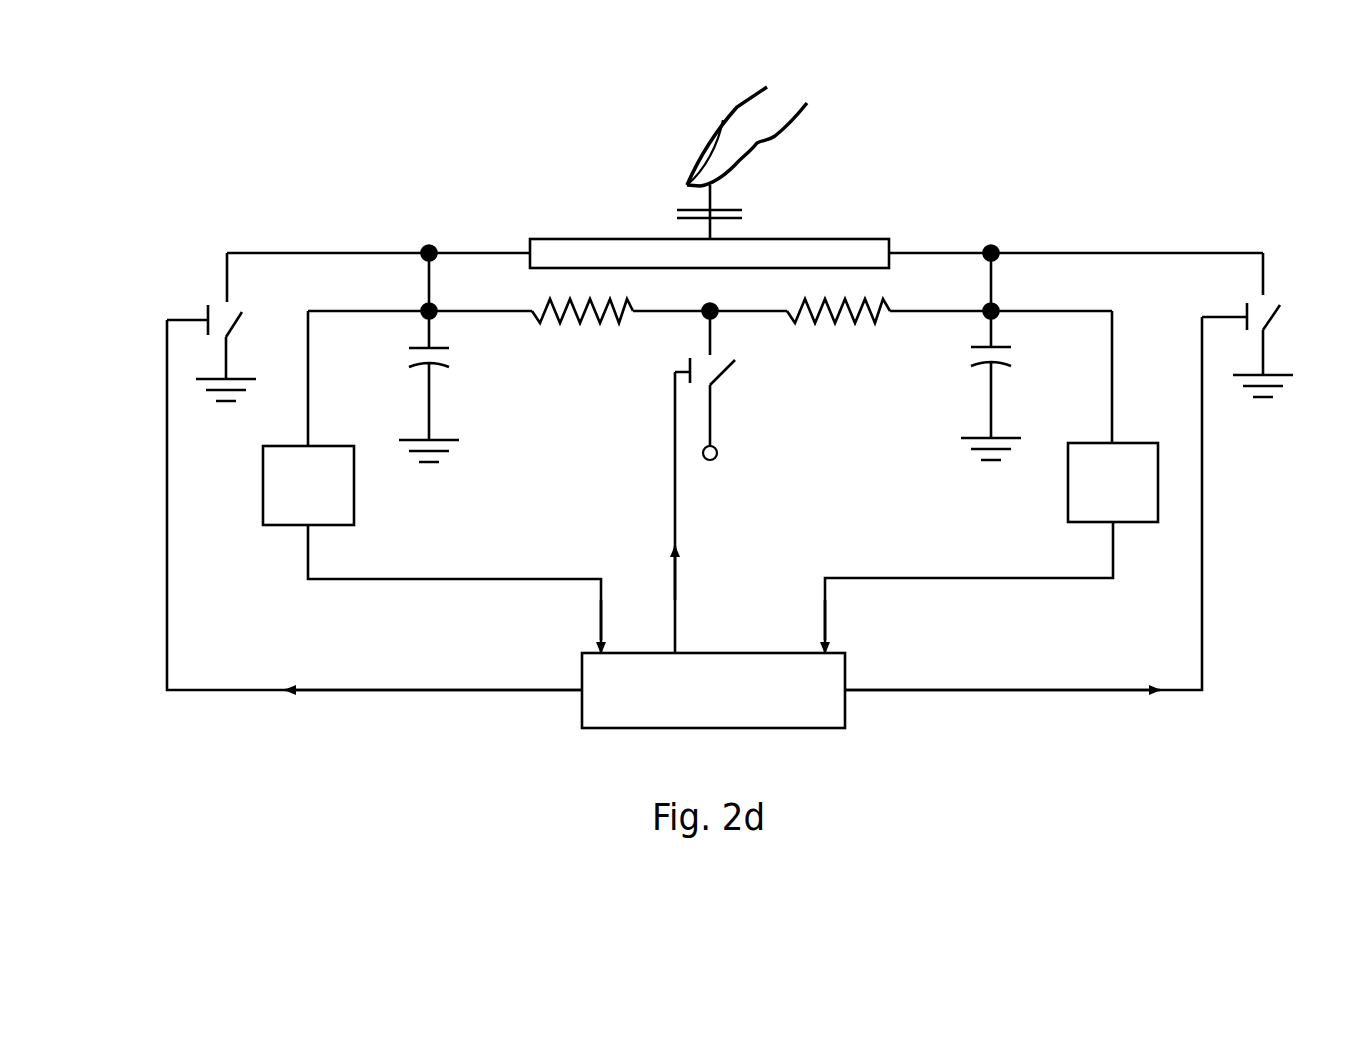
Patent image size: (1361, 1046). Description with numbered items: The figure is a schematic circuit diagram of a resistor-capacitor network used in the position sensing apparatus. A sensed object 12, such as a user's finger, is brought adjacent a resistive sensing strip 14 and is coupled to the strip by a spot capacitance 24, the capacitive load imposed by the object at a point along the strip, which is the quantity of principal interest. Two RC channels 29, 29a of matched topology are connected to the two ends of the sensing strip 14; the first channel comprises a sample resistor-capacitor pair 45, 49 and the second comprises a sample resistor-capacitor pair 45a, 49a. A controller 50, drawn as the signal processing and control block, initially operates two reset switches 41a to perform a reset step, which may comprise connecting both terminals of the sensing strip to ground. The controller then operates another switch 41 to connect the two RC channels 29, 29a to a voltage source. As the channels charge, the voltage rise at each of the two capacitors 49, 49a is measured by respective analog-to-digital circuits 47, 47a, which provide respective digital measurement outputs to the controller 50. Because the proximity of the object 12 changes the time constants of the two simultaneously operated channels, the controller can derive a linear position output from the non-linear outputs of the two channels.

The sensed object 12 is at (728, 118).
The resistive sensing strip 14 is at (548, 238).
The spot capacitance 24 is at (677, 210).
The RC channel 29 is at (589, 436).
The RC channel 29a is at (853, 436).
The switch 41 is at (705, 358).
The reset switches 41a is at (222, 303).
The sample resistor 45 is at (577, 330).
The sample resistor 45a is at (832, 330).
The analog-to-digital circuit 47 is at (280, 526).
The analog-to-digital circuit 47a is at (1145, 524).
The sample capacitor 49 is at (443, 364).
The sample capacitor 49a is at (985, 363).
The controller 50 is at (837, 712).